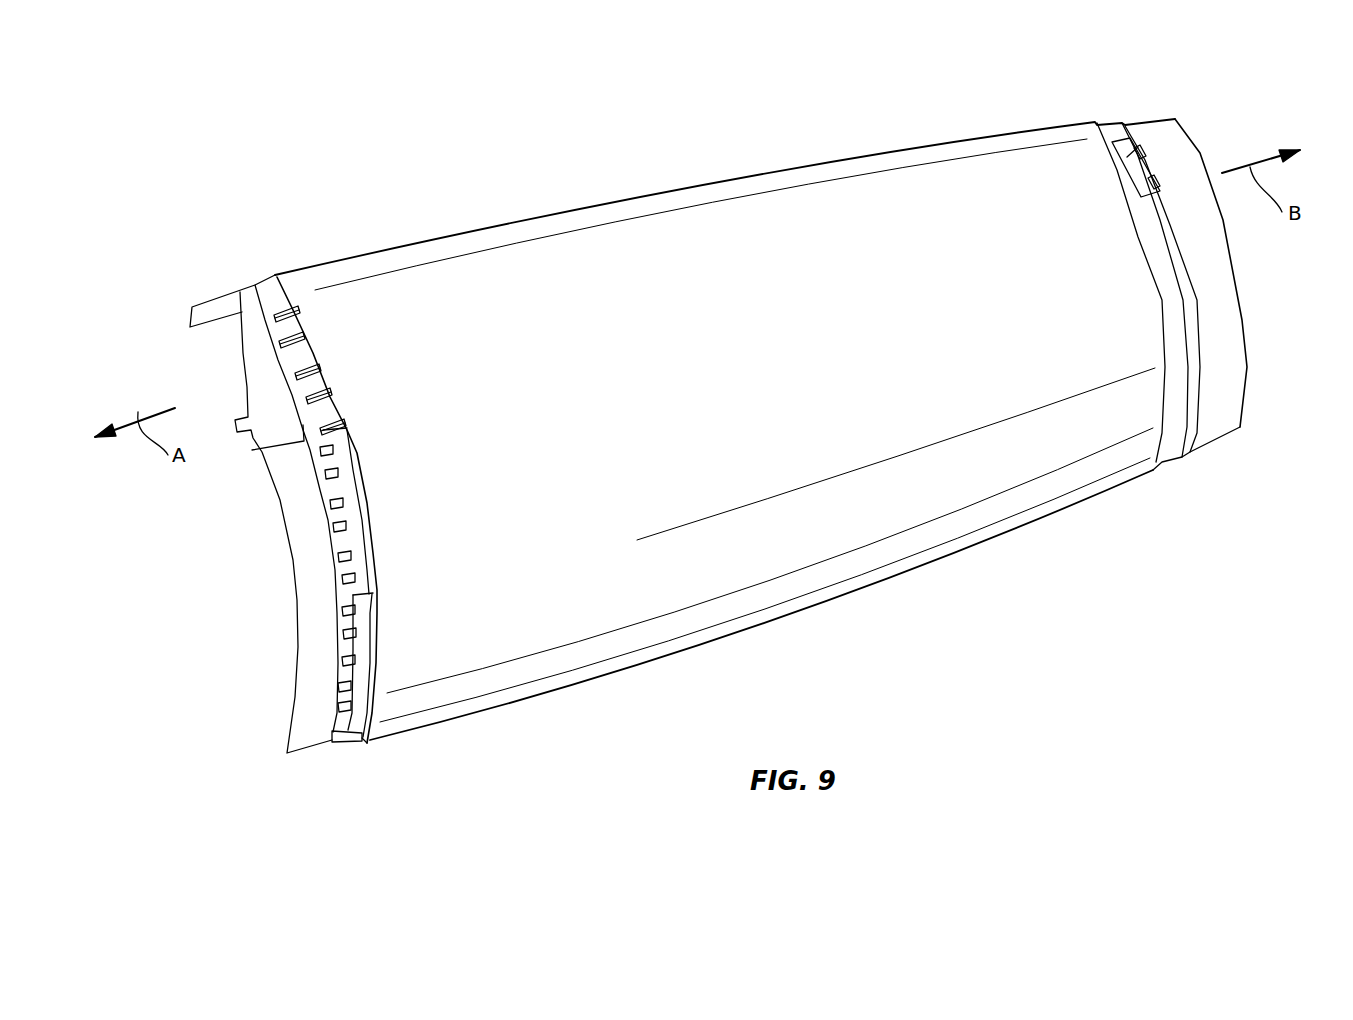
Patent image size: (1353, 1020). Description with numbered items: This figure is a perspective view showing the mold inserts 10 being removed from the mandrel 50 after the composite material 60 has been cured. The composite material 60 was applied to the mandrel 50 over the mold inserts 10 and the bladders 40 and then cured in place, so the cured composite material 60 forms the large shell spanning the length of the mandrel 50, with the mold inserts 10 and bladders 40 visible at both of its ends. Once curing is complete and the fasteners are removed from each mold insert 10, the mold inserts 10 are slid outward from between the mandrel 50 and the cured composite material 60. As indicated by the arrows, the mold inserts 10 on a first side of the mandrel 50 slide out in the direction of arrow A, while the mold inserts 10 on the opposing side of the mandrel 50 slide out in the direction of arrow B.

The mold insert 10 is at (358, 660).
The bladders 40 is at (320, 430).
The mandrel 50 is at (1215, 400).
The composite material 60 is at (690, 252).